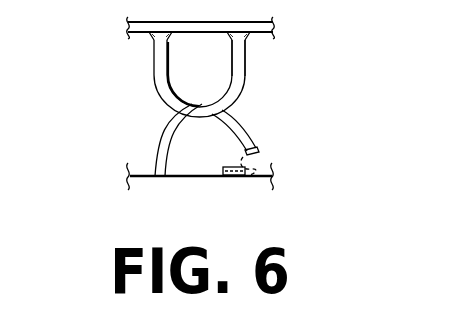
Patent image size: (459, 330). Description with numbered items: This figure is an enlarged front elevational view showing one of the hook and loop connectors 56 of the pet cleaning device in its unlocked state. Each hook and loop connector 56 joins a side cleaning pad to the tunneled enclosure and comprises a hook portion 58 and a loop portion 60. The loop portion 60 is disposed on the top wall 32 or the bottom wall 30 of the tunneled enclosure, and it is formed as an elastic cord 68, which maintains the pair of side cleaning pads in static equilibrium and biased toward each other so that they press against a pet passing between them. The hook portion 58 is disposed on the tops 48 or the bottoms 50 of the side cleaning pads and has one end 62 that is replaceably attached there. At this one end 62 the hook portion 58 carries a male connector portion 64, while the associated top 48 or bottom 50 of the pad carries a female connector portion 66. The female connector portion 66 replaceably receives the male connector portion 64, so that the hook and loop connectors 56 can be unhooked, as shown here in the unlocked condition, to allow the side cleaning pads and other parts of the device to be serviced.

The bottom wall 30 is at (273, 28).
The top wall 32 is at (262, 34).
The tops 48 is at (150, 170).
The bottoms 50 is at (156, 176).
The hook and loop connector 56 is at (207, 78).
The hook portion 58 is at (167, 123).
The loop portion 60 is at (300, 68).
The elastic cord 68 is at (246, 77).
The one end 62 is at (298, 135).
The male connector portion 64 is at (259, 146).
The female connector portion 66 is at (236, 177).